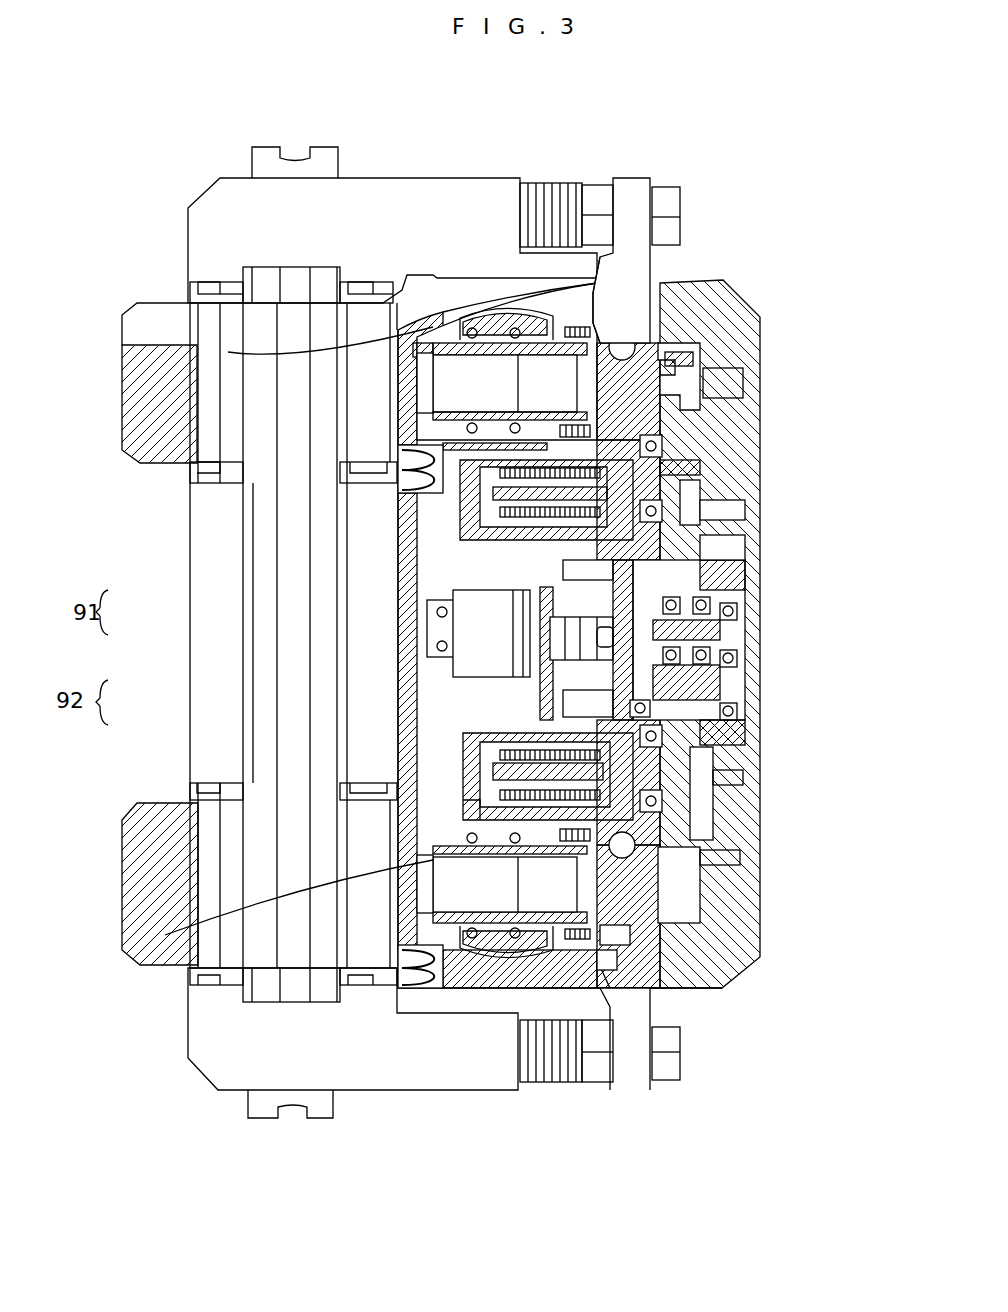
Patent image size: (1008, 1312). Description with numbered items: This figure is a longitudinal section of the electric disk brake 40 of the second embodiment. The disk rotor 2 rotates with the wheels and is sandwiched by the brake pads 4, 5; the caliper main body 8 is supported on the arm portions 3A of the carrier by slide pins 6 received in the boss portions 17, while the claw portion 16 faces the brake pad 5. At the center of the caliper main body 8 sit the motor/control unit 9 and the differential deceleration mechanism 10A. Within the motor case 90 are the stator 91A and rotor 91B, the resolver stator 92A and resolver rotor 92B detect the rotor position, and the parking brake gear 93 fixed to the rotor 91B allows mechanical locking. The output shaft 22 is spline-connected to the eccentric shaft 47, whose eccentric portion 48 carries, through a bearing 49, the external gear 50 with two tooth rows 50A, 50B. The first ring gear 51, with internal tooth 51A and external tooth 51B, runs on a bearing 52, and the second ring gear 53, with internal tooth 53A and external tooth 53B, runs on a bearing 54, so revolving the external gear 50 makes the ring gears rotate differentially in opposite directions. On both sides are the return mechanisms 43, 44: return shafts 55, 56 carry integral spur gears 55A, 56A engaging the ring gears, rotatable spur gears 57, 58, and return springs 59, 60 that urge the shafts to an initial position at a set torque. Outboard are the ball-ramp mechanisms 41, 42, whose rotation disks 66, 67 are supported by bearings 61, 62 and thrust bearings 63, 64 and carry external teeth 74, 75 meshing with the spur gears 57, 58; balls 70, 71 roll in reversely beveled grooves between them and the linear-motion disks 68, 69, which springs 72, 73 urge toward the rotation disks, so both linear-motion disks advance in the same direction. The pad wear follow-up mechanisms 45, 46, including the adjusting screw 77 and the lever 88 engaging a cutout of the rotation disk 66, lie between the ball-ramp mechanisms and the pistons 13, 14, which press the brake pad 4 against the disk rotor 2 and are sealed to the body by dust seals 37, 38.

The disk rotor 2 is at (265, 158).
The arm portion 3A is at (385, 207).
The brake pad 4 is at (362, 372).
The brake pad 5 is at (228, 350).
The slide pin 6 is at (668, 217).
The caliper main body 8 is at (640, 300).
The motor/control unit 9 is at (420, 637).
The differential deceleration mechanism 10A is at (745, 578).
The piston 13 is at (385, 945).
The piston 14 is at (393, 423).
The claw portion 16 is at (150, 372).
The boss portion 17 is at (638, 207).
The output shaft 22 is at (745, 614).
The dust seal 37 is at (427, 990).
The dust seal 38 is at (400, 467).
The electric disk brake 40 is at (723, 150).
The ball-ramp mechanism 41 is at (742, 880).
The ball-ramp mechanism 42 is at (713, 383).
The return mechanism 43 is at (745, 777).
The return mechanism 44 is at (712, 490).
The pad wear follow-up mechanism 45 is at (512, 937).
The pad wear follow-up mechanism 46 is at (497, 322).
The eccentric shaft 47 is at (755, 638).
The eccentric portion 48 is at (747, 590).
The bearing 49 is at (757, 657).
The external gear 50 is at (755, 675).
The external tooth 50A is at (760, 575).
The external tooth 50B is at (745, 545).
The first ring gear 51 is at (762, 757).
The internal tooth 51A is at (762, 683).
The external tooth 51B is at (757, 730).
The bearing 52 is at (745, 717).
The second ring gear 53 is at (700, 522).
The internal tooth 53A is at (760, 693).
The external tooth 53B is at (762, 773).
The bearing 54 is at (700, 497).
The return shaft 55 is at (470, 765).
The spur gear 55A is at (745, 828).
The return shaft 56 is at (400, 447).
The spur gear 56A is at (700, 440).
The spur gear 57 is at (475, 745).
The spur gear 58 is at (700, 472).
The return spring 59 is at (433, 793).
The return spring 60 is at (440, 490).
The bearing 61 is at (700, 960).
The bearing 62 is at (700, 380).
The thrust bearing 63 is at (700, 950).
The thrust bearing 64 is at (700, 335).
The rotation disk 66 is at (630, 945).
The rotation disk 67 is at (627, 340).
The linear-motion disk 68 is at (607, 973).
The linear-motion disk 69 is at (603, 323).
The ball 70 is at (757, 857).
The ball 71 is at (705, 300).
The spring 72 is at (470, 940).
The spring 73 is at (470, 333).
The external tooth 74 is at (660, 988).
The external tooth 75 is at (700, 460).
The adjusting screw 77 is at (165, 935).
The lever 88 is at (633, 990).
The motor case 90 is at (440, 520).
The stator 91A is at (465, 590).
The rotor 91B is at (465, 600).
The resolver stator 92A is at (465, 690).
The resolver rotor 92B is at (465, 675).
The parking brake gear 93 is at (465, 560).